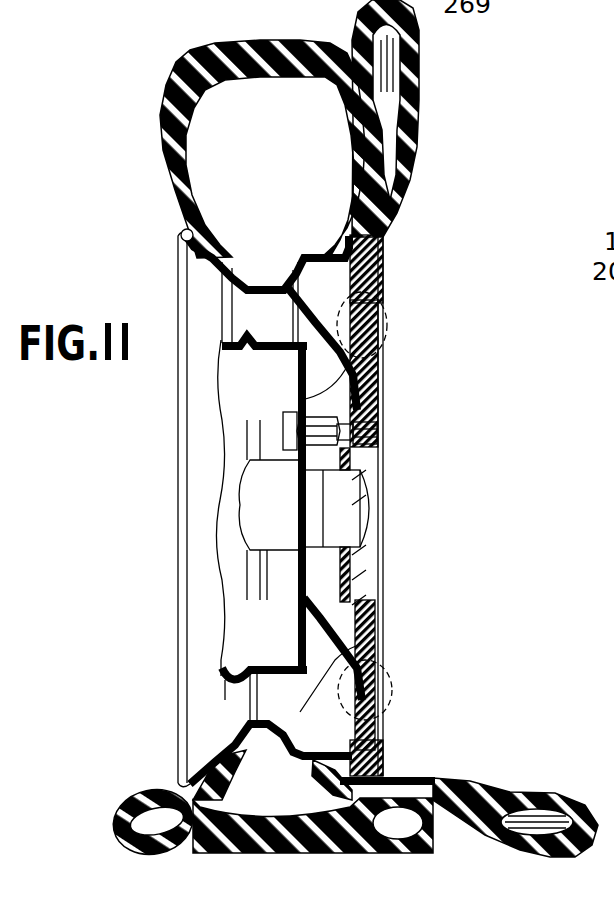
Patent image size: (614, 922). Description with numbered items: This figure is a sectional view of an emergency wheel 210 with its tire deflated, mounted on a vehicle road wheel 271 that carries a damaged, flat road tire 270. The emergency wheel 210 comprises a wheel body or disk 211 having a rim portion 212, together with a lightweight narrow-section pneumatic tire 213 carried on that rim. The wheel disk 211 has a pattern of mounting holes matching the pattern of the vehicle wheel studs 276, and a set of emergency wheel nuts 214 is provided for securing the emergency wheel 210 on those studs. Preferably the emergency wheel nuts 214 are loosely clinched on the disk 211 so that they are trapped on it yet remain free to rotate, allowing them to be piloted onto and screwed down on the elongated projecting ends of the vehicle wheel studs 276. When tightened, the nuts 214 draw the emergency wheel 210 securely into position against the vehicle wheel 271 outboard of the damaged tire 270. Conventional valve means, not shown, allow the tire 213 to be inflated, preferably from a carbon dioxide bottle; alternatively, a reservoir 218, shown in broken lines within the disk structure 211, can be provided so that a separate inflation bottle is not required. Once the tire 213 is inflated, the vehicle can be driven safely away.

The emergency wheel 210 is at (432, 149).
The damaged road tire 270 is at (200, 50).
The pneumatic tire 213 is at (420, 82).
The vehicle road wheel 271 is at (176, 278).
The rim portion 212 is at (380, 250).
The reservoir 218 is at (388, 337).
The emergency wheel nuts 214 is at (352, 450).
The wheel disk 211 is at (362, 398).
The vehicle wheel stud 276 is at (378, 431).